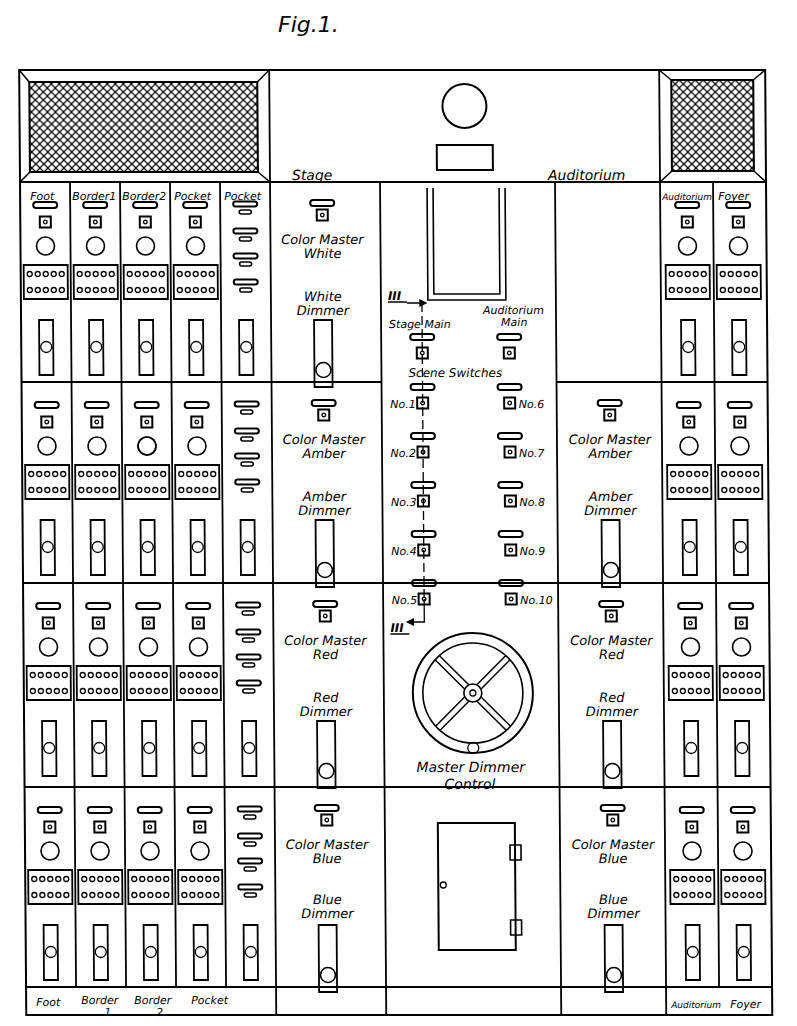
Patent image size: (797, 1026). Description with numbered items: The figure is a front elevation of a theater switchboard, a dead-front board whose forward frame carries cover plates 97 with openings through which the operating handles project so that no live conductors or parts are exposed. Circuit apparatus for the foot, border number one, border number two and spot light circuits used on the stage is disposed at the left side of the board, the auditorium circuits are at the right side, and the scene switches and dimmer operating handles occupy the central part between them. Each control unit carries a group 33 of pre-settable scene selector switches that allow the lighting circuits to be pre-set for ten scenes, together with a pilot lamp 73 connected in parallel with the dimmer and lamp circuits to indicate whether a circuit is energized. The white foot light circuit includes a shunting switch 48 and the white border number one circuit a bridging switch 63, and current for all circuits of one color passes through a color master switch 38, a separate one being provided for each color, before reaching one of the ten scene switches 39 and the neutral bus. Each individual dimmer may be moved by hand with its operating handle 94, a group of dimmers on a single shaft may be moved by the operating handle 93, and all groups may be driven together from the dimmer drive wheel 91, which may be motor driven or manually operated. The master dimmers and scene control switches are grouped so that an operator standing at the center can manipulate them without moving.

The cover plates 97 is at (275, 187).
The color master switch 38 is at (329, 216).
The shunting switch 48 is at (49, 224).
The bridging switch 63 is at (99, 224).
The pilot lamp 73 is at (50, 248).
The group of pre-settable switches 33 is at (369, 584).
The operating handles 94 is at (49, 346).
The operating handles 93 is at (314, 371).
The scene switches 39 is at (501, 403).
The dimmer drive wheel 91 is at (519, 673).